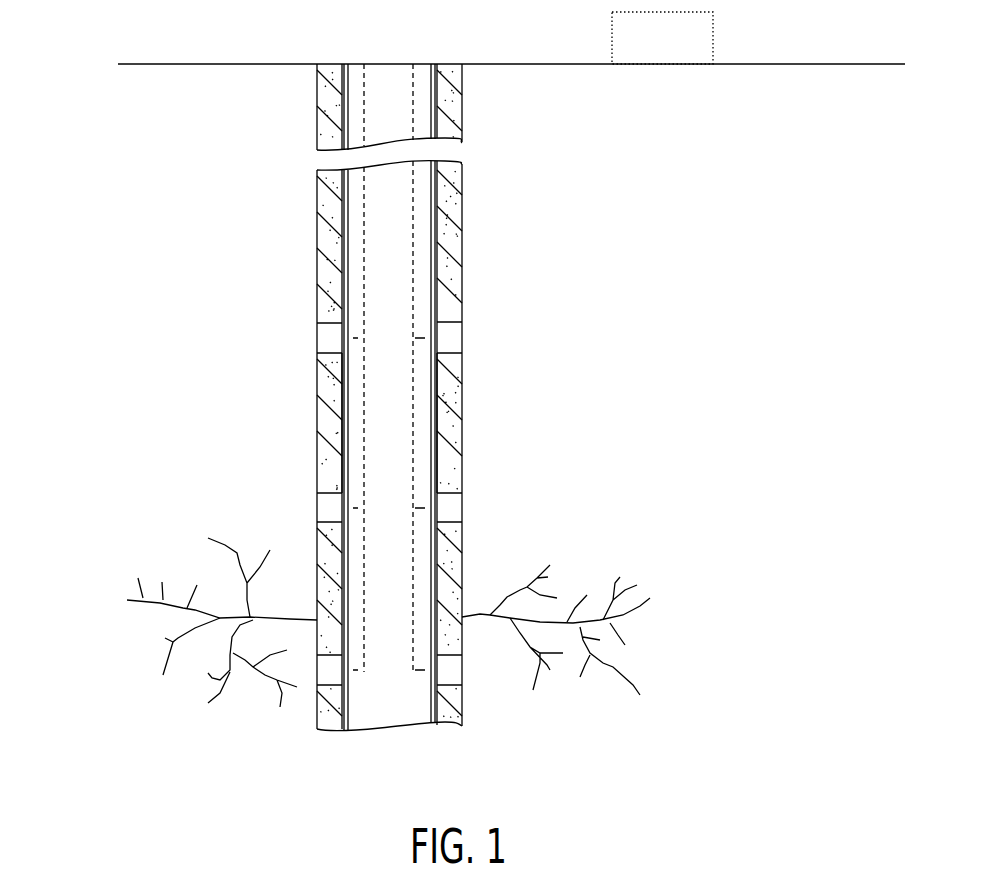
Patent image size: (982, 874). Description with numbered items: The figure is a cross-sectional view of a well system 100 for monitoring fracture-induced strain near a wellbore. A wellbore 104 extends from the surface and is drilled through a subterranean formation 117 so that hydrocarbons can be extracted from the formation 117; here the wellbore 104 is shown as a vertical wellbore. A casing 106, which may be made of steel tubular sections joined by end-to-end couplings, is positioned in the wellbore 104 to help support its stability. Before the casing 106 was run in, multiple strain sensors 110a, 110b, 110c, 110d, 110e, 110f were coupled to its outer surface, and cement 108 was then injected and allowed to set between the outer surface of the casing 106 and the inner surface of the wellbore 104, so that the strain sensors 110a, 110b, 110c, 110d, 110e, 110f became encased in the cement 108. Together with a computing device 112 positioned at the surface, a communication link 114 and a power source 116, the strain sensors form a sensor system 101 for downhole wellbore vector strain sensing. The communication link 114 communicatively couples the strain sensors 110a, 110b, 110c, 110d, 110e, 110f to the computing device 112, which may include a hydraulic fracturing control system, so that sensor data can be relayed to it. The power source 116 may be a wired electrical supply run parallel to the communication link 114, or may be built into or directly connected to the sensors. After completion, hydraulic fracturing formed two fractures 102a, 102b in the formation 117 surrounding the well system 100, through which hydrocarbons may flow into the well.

The well system 100 is at (112, 138).
The sensor system 101 is at (518, 265).
The fracture 102a is at (222, 628).
The fracture 102b is at (557, 653).
The wellbore 104 is at (318, 102).
The casing 106 is at (330, 245).
The cement 108 is at (330, 393).
The strain sensor 110a is at (330, 340).
The strain sensor 110b is at (445, 338).
The strain sensor 110c is at (330, 508).
The strain sensor 110d is at (445, 505).
The strain sensor 110e is at (330, 670).
The strain sensor 110f is at (448, 670).
The computing device 112 is at (678, 53).
The communication link 114 is at (360, 424).
The power source 116 is at (362, 129).
The subterranean formation 117 is at (778, 369).